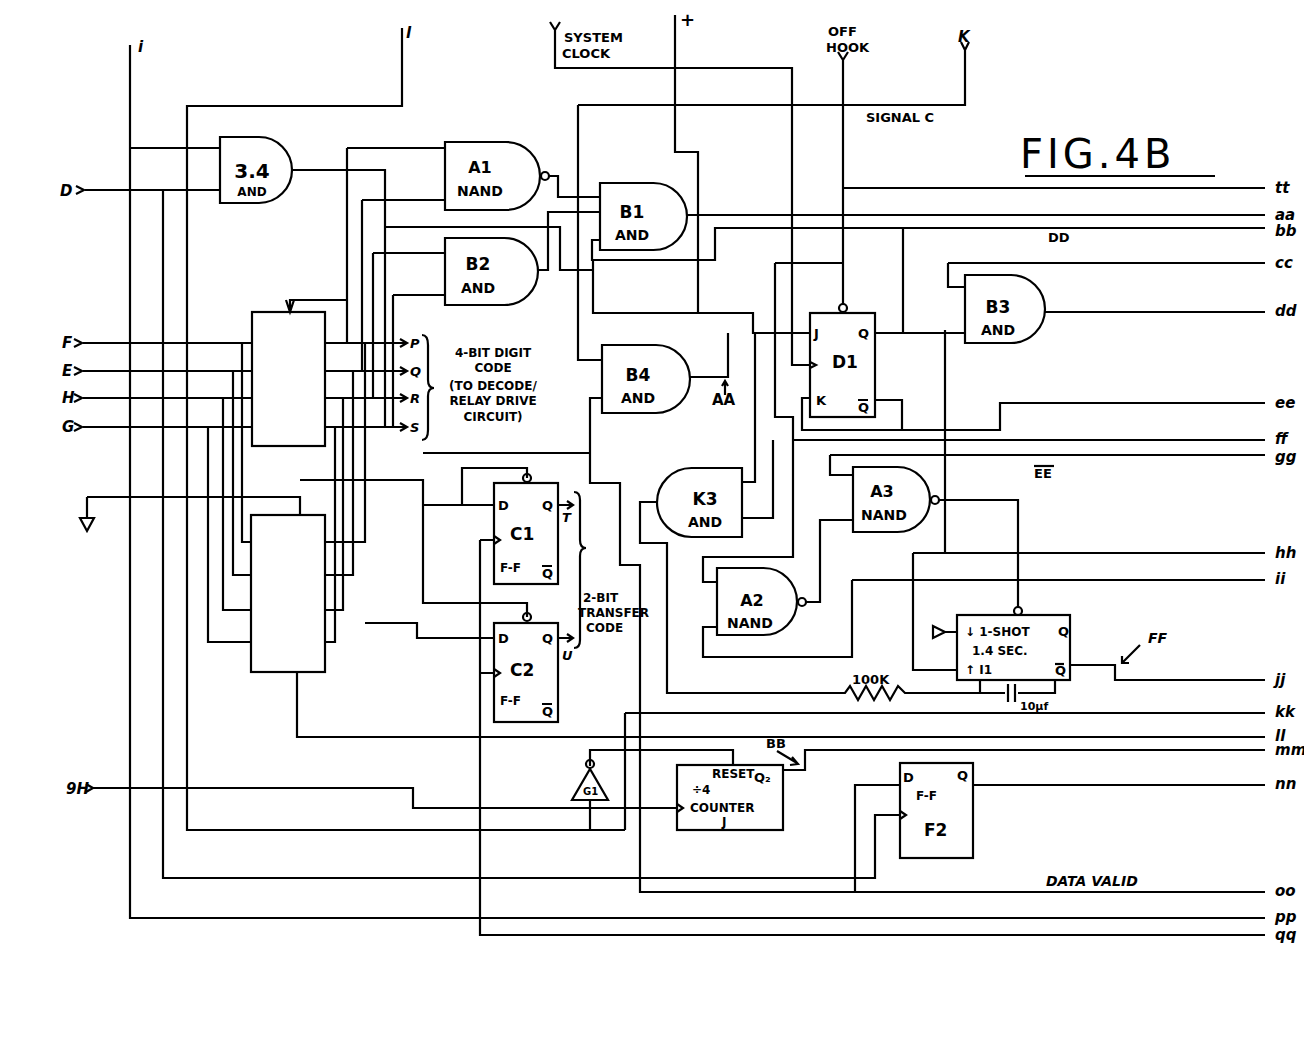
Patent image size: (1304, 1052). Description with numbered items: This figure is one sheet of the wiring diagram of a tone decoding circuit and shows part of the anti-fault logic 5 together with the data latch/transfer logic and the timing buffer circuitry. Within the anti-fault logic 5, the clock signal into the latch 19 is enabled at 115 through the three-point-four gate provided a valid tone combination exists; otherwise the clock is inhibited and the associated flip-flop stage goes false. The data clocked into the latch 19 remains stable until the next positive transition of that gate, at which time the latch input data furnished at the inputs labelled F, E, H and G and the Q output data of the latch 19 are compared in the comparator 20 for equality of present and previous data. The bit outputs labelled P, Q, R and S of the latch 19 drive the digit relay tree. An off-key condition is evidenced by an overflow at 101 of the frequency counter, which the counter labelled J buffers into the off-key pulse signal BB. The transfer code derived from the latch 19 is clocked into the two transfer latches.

The clock signal input of latch 19 115 is at (329, 355).
The latch 19 is at (305, 300).
The comparator 20 is at (758, 626).
The anti-fault logic 5 is at (404, 677).
The overflow output of the frequency counter 101 is at (228, 787).